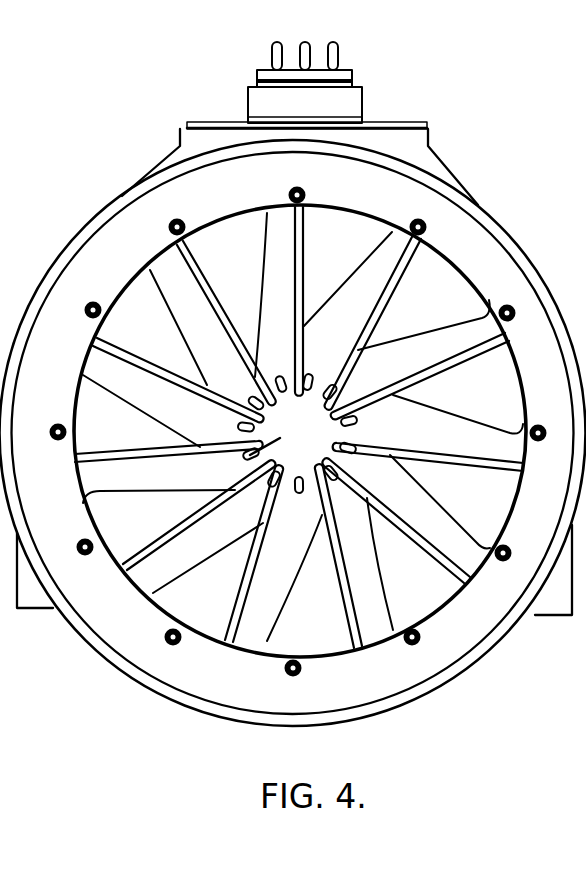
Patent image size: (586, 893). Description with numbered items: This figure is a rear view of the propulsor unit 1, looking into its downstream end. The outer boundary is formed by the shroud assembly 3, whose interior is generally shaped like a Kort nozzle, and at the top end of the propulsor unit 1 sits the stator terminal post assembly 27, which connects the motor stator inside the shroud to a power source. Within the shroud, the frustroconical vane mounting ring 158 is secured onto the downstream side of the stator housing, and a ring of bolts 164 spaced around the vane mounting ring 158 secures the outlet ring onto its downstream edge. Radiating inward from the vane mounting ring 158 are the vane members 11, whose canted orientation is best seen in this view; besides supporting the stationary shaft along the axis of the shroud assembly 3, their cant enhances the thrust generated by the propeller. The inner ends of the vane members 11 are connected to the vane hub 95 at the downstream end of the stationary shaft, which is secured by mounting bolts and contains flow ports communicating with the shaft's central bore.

The propulsor unit 1 is at (131, 173).
The shroud assembly 3 is at (72, 243).
The stator terminal post assembly 27 is at (343, 102).
The vane mounting ring 158 is at (458, 268).
The bolts 164 is at (507, 320).
The vane hub 95 is at (255, 455).
The vane members 11 is at (441, 537).